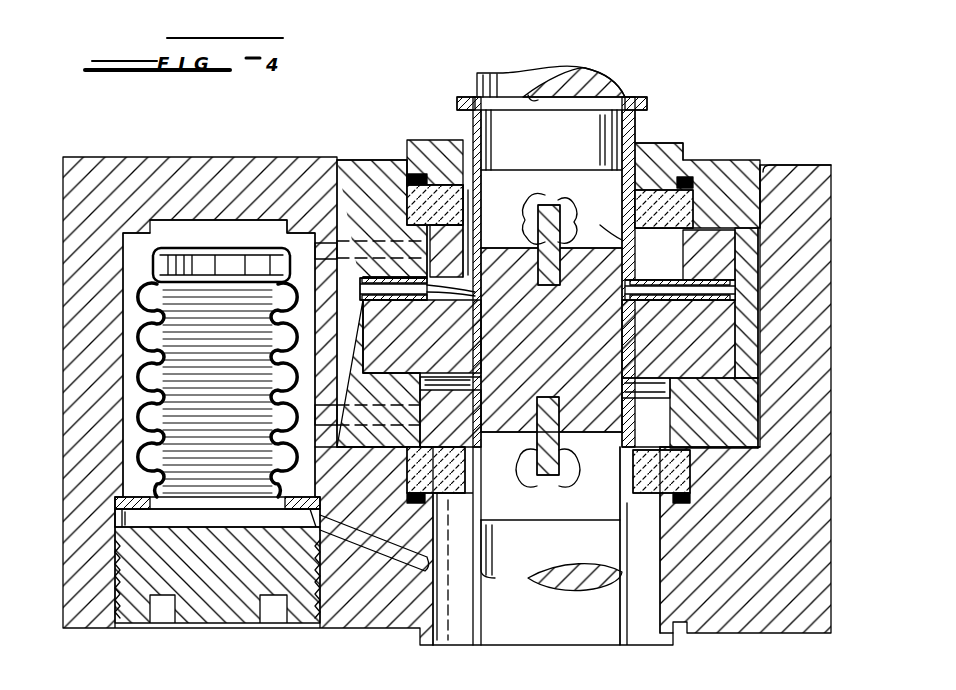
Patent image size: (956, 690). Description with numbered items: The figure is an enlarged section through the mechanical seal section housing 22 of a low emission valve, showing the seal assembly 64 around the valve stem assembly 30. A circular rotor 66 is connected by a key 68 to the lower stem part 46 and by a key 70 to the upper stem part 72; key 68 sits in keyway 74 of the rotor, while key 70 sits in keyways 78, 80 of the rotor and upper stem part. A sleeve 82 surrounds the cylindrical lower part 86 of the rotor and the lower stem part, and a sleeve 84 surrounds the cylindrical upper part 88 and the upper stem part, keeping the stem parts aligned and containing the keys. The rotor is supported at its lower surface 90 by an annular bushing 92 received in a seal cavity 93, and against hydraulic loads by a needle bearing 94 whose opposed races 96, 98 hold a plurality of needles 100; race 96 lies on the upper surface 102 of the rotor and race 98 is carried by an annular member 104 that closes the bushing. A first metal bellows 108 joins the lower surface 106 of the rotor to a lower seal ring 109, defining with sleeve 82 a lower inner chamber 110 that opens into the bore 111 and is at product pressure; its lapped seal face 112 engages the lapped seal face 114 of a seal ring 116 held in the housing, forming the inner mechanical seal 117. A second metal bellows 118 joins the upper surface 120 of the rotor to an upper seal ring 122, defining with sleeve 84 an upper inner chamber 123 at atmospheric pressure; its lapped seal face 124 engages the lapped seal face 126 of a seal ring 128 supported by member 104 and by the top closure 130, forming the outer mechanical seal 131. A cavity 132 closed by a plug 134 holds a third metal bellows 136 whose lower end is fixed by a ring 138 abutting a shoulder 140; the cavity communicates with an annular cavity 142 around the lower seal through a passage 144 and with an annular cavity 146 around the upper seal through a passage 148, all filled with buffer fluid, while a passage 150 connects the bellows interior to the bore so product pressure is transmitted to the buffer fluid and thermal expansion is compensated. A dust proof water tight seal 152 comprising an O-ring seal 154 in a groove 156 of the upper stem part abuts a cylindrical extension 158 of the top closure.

The mechanical seal section housing 22 is at (770, 262).
The valve stem assembly 30 is at (500, 585).
The lower stem part 46 is at (545, 566).
The seal assembly 64 is at (812, 436).
The circular rotor 66 is at (720, 335).
The key 68 is at (562, 465).
The key 70 is at (548, 205).
The upper stem part 72 is at (468, 97).
The keyway 74 is at (562, 415).
The keyway 78 is at (562, 278).
The keyway 80 is at (560, 215).
The sleeve 82 is at (480, 392).
The sleeve 84 is at (465, 290).
The cylindrical lower part of the rotor 86 is at (551, 538).
The cylindrical upper part of the rotor 88 is at (500, 250).
The lower surface of the rotor 90 is at (735, 382).
The annular bushing 92 is at (760, 402).
The seal cavity 93 is at (740, 460).
The needle bearing 94 is at (735, 215).
The race 96 is at (722, 282).
The race 98 is at (605, 221).
The needles 100 is at (740, 292).
The upper surface of the rotor 102 is at (748, 300).
The annular member 104 is at (834, 172).
The lower surface of the rotor 106 is at (650, 380).
The first metal bellows 108 is at (688, 380).
The lower seal ring 109 is at (672, 426).
The lower inner zone or chamber 110 is at (495, 378).
The bore 111 is at (655, 598).
The lapped seal face 112 is at (692, 470).
The lapped seal face 114 is at (642, 498).
The seal ring 116 is at (692, 500).
The inner or lower mechanical seal 117 is at (395, 472).
The second metal bellows 118 is at (448, 304).
The upper surface of the rotor 120 is at (630, 304).
The upper seal ring 122 is at (478, 262).
The upper inner zone or chamber 123 is at (640, 339).
The lapped seal face 124 is at (425, 200).
The lapped seal face 126 is at (660, 200).
The seal ring 128 is at (690, 180).
The top closure 130 is at (430, 148).
The outer or upper mechanical seal 131 is at (735, 200).
The cavity 132 is at (105, 468).
The closure member or plug 134 is at (140, 625).
The third metal bellows 136 is at (160, 388).
The ring 138 is at (172, 505).
The shoulder 140 is at (118, 520).
The annular cavity 142 is at (434, 492).
The passage 144 is at (410, 405).
The annular cavity 146 is at (350, 165).
The passage 148 is at (386, 304).
The passage 150 is at (428, 562).
The dust proof water tight seal 152 is at (515, 80).
The O-ring seal 154 is at (632, 92).
The groove 156 is at (545, 95).
The cylindrical extension 158 is at (648, 112).